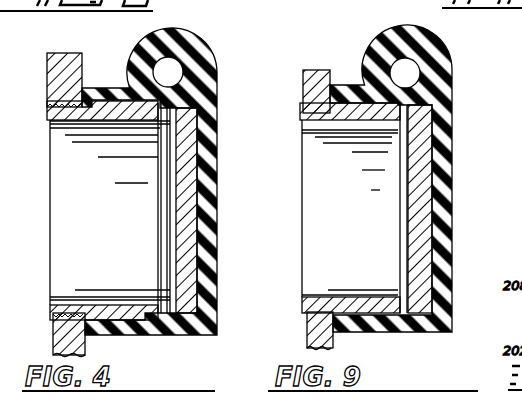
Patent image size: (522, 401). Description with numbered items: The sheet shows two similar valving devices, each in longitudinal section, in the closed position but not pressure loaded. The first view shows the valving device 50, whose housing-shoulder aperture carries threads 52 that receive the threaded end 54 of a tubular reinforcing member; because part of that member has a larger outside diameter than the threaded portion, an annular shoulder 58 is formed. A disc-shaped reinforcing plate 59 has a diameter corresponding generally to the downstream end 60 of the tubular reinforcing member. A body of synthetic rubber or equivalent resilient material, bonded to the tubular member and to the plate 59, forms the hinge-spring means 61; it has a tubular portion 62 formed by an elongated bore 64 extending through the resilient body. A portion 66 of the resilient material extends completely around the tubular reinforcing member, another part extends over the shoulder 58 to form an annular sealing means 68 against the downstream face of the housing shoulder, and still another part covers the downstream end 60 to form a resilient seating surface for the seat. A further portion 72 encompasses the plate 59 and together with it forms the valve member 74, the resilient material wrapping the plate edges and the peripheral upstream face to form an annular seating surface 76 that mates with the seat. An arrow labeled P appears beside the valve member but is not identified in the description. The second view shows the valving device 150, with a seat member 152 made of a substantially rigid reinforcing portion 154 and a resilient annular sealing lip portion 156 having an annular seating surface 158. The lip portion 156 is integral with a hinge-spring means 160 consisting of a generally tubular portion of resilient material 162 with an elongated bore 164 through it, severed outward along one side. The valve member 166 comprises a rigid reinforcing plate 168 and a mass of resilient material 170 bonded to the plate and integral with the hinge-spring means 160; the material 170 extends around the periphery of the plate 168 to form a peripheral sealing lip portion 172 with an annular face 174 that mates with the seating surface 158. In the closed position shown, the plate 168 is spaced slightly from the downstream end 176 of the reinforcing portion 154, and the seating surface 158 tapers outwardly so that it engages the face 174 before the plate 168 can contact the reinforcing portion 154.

In FIG. 4, the valving device 50 is at (173, 184).
In FIG. 4, the threads 52 is at (54, 320).
In FIG. 4, the threaded end 54 is at (55, 309).
In FIG. 4, the annular shoulder 58 is at (148, 277).
In FIG. 4, the reinforcing plate 59 is at (190, 272).
In FIG. 4, the downstream end 60 is at (165, 222).
In FIG. 4, the hinge-spring means 61 is at (172, 172).
In FIG. 4, the tubular portion 62 is at (172, 32).
In FIG. 4, the elongated bore 64 is at (178, 60).
In FIG. 4, the portion of resilient material 66 is at (152, 333).
In FIG. 4, the annular sealing means 68 is at (86, 90).
In FIG. 4, the portion of resilient material 72 is at (212, 244).
In FIG. 4, the valve member 74 is at (217, 174).
In FIG. 4, the annular seating surface 76 is at (173, 199).
In FIG. 4, the pressure direction P is at (222, 207).
In FIG. 9, the valving device 150 is at (421, 184).
In FIG. 9, the seat member 152 is at (342, 342).
In FIG. 9, the rigid reinforcing portion 154 is at (338, 305).
In FIG. 9, the resilient annular sealing lip portion 156 is at (353, 80).
In FIG. 9, the annular seating surface 158 is at (403, 333).
In FIG. 9, the hinge-spring means 160 is at (406, 173).
In FIG. 9, the tubular portion of resilient material 162 is at (417, 42).
In FIG. 9, the elongated bore 164 is at (416, 62).
In FIG. 9, the valve member 166 is at (457, 212).
In FIG. 9, the reinforcing plate 168 is at (420, 270).
In FIG. 9, the mass of resilient material 170 is at (440, 151).
In FIG. 9, the peripheral sealing lip portion 172 is at (447, 308).
In FIG. 9, the annular face 174 is at (417, 327).
In FIG. 9, the downstream end 176 is at (407, 308).